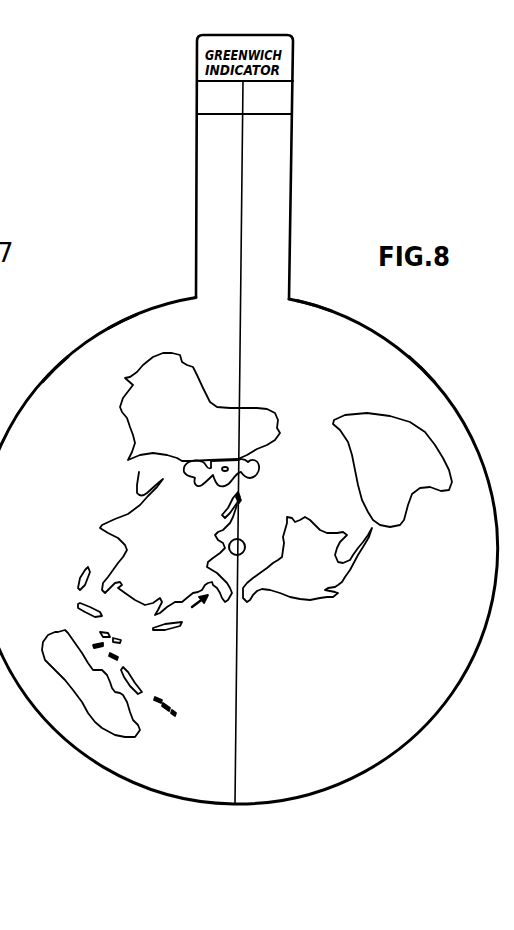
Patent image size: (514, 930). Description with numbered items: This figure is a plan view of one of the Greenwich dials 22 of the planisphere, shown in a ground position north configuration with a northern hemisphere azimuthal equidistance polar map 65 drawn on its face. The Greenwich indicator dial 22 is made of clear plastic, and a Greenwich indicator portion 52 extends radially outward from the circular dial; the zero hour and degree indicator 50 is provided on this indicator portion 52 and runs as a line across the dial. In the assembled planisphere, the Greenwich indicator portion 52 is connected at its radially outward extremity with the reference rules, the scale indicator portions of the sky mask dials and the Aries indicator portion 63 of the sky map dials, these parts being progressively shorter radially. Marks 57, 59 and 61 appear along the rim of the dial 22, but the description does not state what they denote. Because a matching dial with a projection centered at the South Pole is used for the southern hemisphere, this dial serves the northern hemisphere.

The Greenwich indicator dial 22 is at (57, 733).
The zero hour and degree indicator 50 is at (242, 158).
The Greenwich indicator portion 52 is at (292, 120).
The rim scale mark 57 is at (125, 328).
The rim scale mark 59 is at (57, 373).
The rim scale mark 61 is at (416, 371).
The Aries indicator portion 63 is at (311, 303).
The northern hemisphere azimuthal equidistance polar map 65 is at (403, 487).